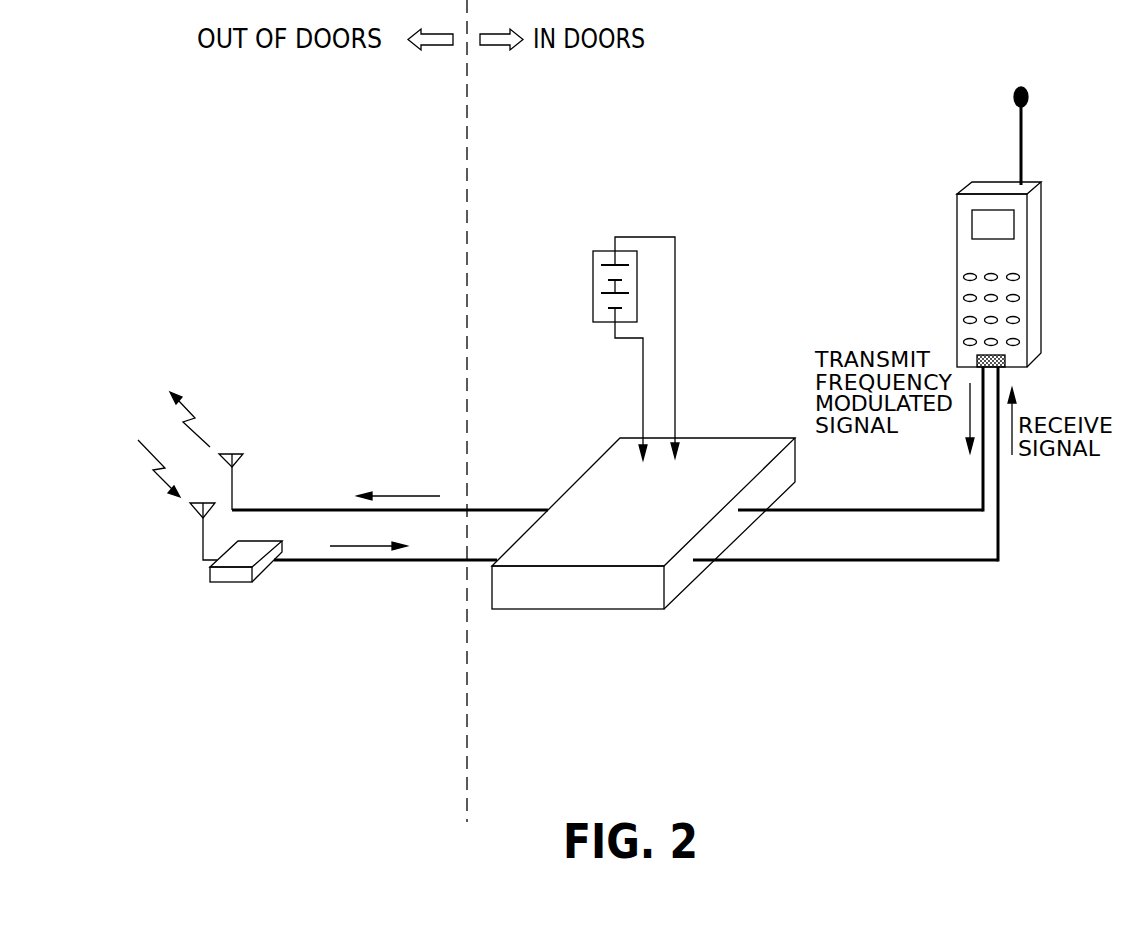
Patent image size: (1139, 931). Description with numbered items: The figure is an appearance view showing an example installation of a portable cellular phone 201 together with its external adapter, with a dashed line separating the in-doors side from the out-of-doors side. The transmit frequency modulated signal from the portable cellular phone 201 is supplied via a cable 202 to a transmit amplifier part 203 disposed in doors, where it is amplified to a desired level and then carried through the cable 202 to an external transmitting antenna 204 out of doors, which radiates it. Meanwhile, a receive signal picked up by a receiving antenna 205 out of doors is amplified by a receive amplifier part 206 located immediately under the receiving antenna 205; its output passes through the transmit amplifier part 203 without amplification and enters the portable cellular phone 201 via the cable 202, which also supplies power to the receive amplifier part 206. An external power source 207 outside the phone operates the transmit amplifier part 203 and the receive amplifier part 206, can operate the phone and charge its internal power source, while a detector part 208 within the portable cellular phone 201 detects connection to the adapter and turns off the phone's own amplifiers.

The portable cellular phone 201 is at (957, 217).
The cable 202 is at (427, 511).
The transmit amplifier part 203 is at (607, 609).
The external transmitting antenna 204 is at (241, 453).
The receiving antenna 205 is at (195, 508).
The receive amplifier part 206 is at (242, 583).
The external power source 207 is at (602, 250).
The detector part 208 is at (1006, 360).